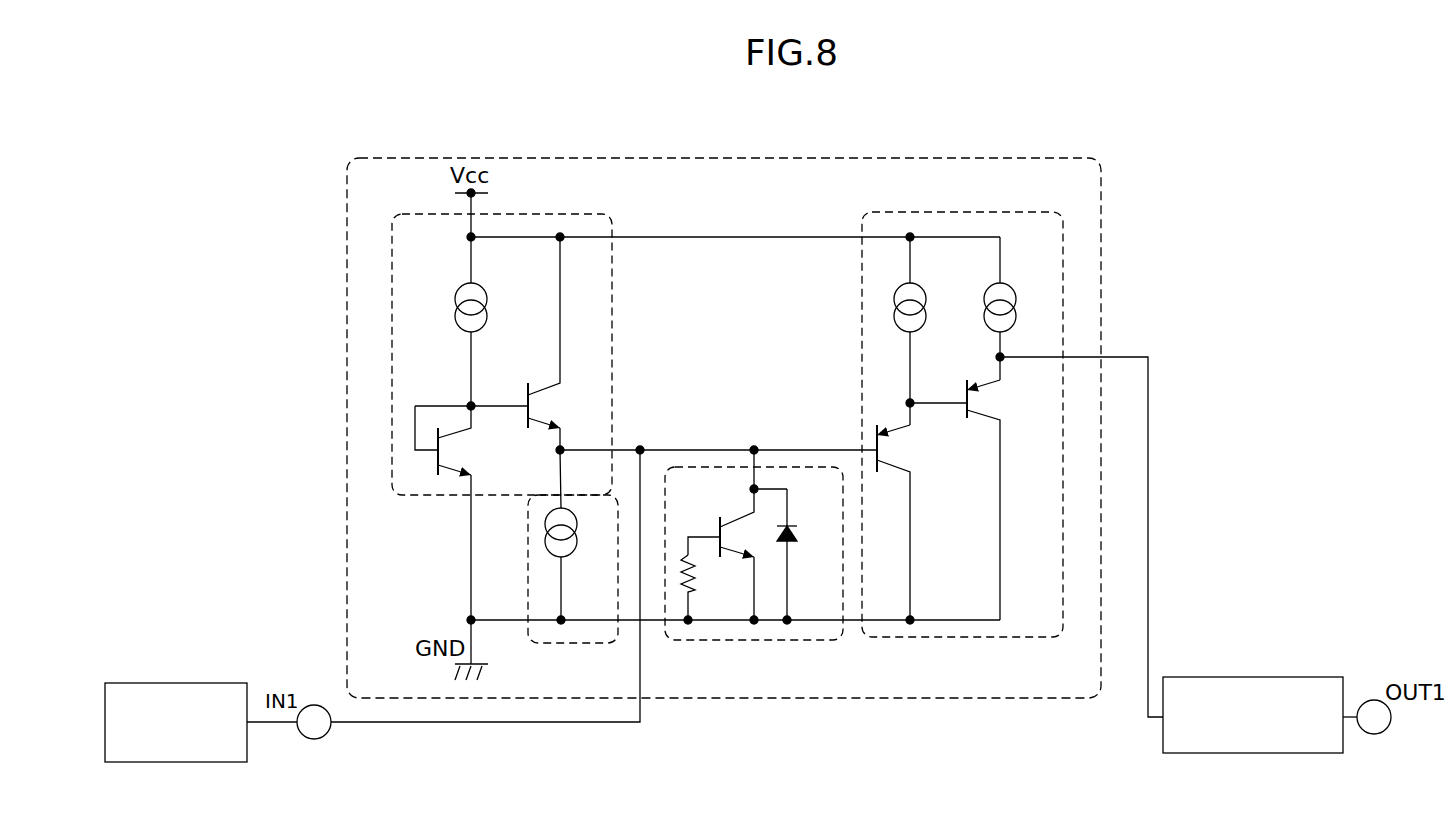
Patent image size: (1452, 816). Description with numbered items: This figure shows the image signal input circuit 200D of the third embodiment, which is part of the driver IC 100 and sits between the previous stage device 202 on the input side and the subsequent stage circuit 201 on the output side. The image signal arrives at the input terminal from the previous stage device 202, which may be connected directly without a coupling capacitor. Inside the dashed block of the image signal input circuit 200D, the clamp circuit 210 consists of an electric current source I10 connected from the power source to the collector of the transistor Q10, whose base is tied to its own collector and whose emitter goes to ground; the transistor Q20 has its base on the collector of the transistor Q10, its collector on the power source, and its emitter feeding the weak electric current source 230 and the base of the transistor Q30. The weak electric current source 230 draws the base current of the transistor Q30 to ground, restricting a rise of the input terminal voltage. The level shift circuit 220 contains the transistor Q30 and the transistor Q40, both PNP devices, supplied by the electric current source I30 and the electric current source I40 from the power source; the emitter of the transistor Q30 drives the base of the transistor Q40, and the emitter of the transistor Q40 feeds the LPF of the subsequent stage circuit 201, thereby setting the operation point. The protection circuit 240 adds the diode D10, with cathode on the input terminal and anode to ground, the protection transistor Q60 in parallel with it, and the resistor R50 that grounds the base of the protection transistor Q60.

The driver IC 100 is at (1172, 123).
The image signal input circuit 200D is at (1040, 157).
The clamp circuit 210 is at (548, 211).
The level shift circuit 220 is at (995, 209).
The weak electric current source 230 is at (582, 643).
The protection circuit 240 is at (754, 574).
The subsequent stage circuit 201 is at (1228, 677).
The previous stage device 202 is at (168, 683).
The electric current source I10 is at (490, 321).
The electric current source I30 is at (929, 320).
The electric current source I40 is at (1018, 297).
The transistor Q10 is at (466, 513).
The transistor Q20 is at (567, 343).
The transistor Q30 is at (916, 511).
The transistor Q40 is at (979, 488).
The protection transistor Q60 is at (721, 554).
The resistor R50 is at (714, 587).
The diode D10 is at (807, 554).